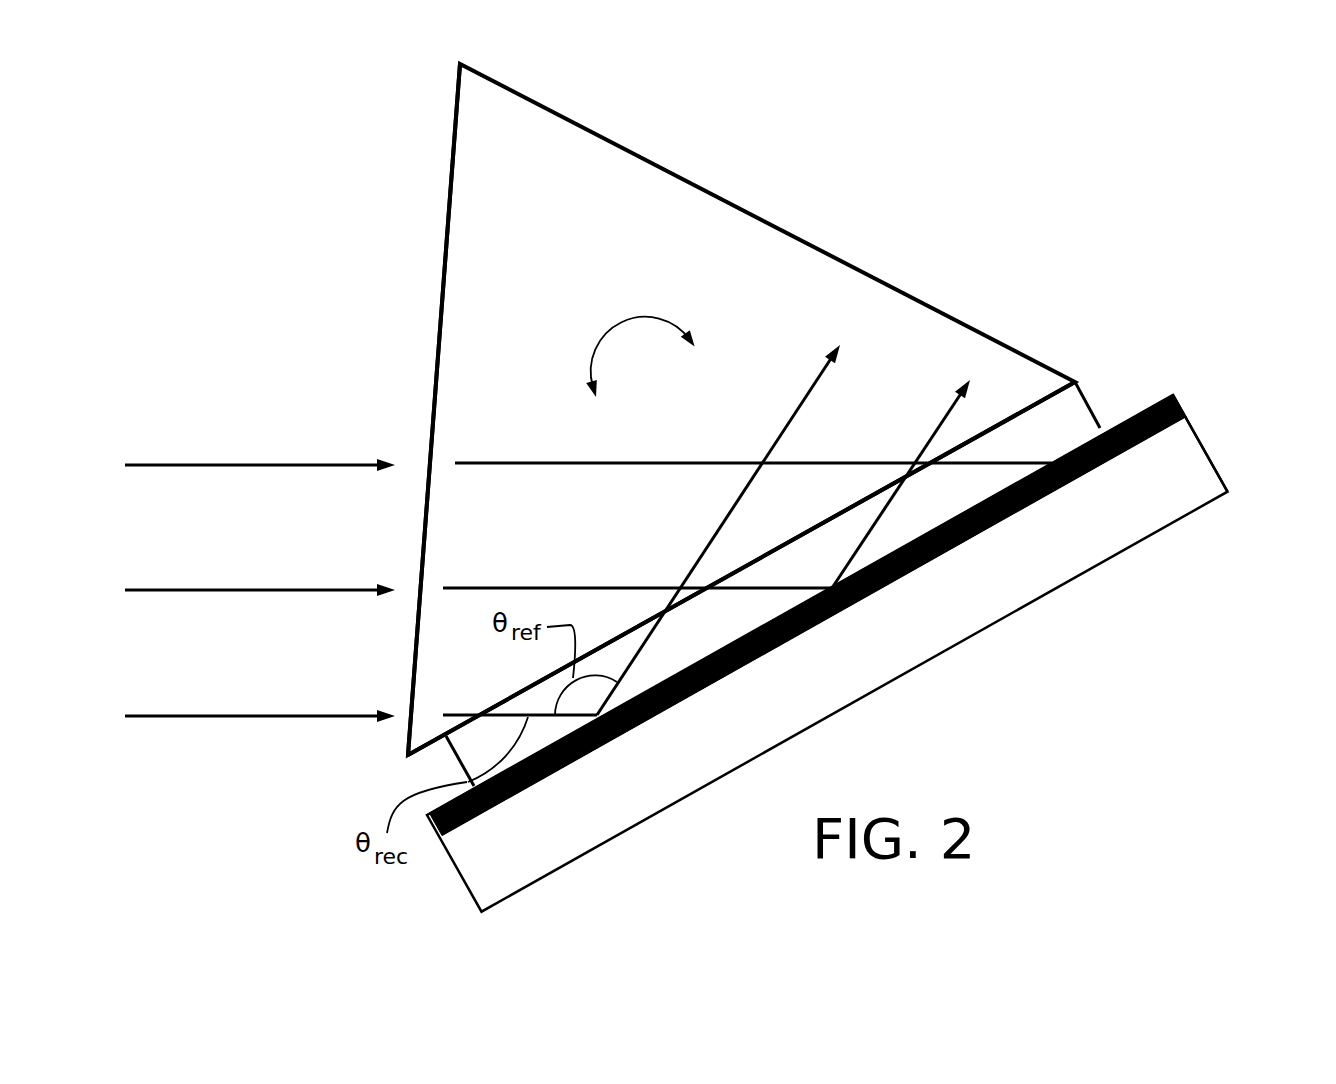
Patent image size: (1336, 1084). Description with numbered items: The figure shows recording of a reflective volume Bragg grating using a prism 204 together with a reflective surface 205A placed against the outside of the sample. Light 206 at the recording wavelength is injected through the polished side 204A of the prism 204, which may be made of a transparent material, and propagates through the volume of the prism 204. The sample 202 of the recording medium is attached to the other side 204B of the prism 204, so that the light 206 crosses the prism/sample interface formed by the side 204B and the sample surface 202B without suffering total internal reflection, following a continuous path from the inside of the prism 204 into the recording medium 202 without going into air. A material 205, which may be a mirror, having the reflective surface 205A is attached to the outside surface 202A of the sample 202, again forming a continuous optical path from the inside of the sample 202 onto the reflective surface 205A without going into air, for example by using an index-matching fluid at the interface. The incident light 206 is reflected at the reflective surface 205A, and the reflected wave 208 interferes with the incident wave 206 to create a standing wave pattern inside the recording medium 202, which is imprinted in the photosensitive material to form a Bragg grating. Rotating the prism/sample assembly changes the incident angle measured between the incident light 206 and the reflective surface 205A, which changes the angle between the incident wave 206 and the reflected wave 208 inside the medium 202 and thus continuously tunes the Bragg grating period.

The sample 202 is at (1102, 418).
The outside surface of the sample 202A is at (1067, 442).
The sample side of the prism/sample interface 202B is at (1012, 413).
The prism 204 is at (610, 183).
The polished side of the prism 204A is at (447, 221).
The side of the prism 204B is at (424, 748).
The material having a reflective surface 205 is at (1103, 528).
The reflective surface 205A is at (1107, 422).
The light 206 is at (297, 425).
The reflected wave 208 is at (889, 378).